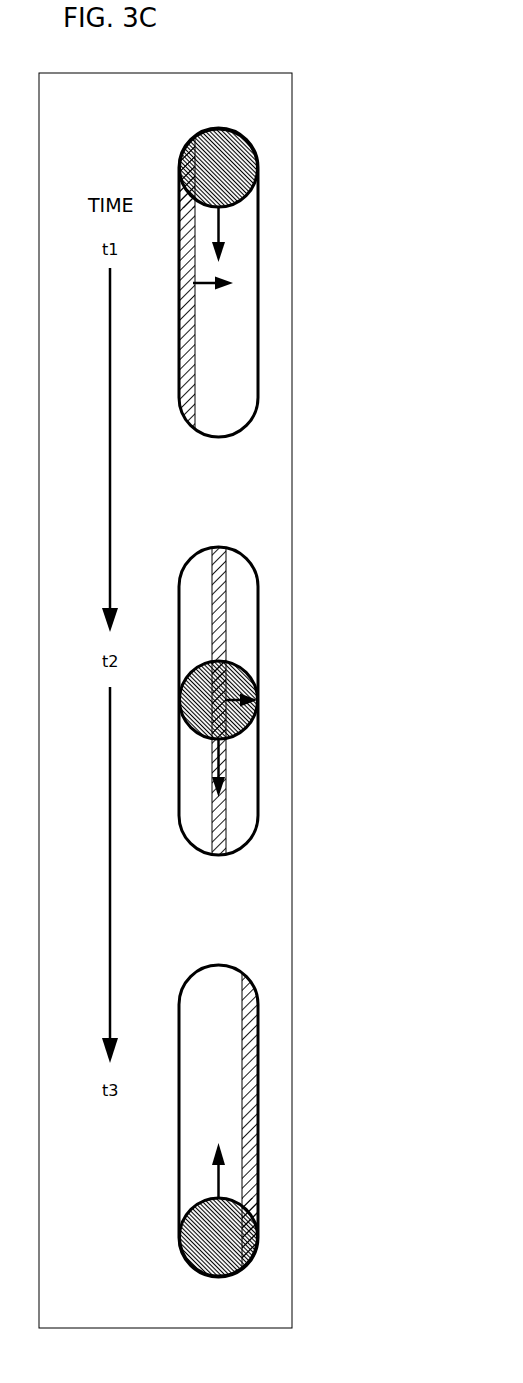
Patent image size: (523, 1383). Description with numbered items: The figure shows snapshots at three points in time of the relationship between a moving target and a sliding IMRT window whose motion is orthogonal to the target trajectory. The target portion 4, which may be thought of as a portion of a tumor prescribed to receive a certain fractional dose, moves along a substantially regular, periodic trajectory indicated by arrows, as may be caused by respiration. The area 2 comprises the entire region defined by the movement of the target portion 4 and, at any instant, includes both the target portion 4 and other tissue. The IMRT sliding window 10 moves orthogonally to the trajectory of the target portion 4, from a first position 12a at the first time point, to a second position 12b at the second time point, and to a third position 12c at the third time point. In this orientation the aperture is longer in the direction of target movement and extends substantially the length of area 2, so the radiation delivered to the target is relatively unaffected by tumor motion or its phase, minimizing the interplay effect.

The area 2 is at (246, 255).
The target portion 4 is at (253, 150).
The IMRT sliding window 10 is at (187, 343).
The first position 12a is at (231, 152).
The second position 12b is at (218, 682).
The third position 12c is at (247, 1238).